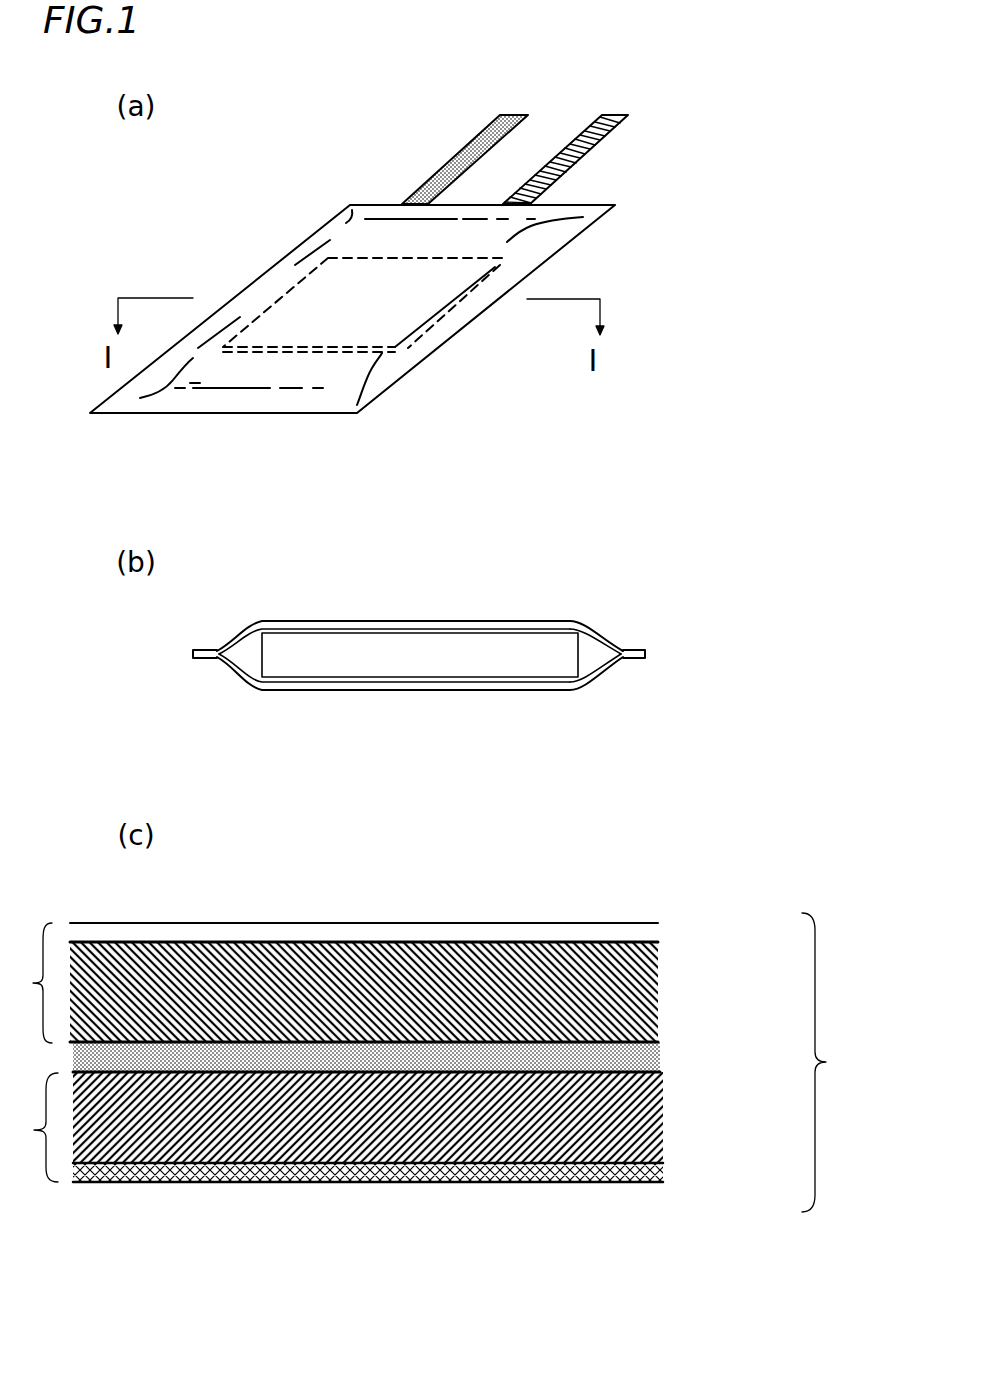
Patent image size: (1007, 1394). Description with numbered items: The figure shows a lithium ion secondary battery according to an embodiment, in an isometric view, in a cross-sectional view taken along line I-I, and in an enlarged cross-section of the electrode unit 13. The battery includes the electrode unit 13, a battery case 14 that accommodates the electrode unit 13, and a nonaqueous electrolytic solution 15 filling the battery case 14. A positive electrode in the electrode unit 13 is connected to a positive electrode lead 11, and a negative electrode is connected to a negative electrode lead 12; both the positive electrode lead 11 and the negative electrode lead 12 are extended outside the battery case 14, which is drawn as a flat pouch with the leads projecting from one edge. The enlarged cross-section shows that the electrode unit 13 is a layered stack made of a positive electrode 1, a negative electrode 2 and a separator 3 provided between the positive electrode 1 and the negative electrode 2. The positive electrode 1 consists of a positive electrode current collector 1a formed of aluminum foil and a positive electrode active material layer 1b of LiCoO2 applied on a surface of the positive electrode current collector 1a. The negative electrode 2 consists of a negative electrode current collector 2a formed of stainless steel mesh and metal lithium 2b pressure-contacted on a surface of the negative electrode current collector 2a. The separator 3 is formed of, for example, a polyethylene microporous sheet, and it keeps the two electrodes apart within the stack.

The positive electrode 1 is at (383, 978).
The positive electrode current collector 1a is at (652, 933).
The positive electrode active material layer 1b is at (658, 988).
The negative electrode 2 is at (395, 1143).
The negative electrode current collector 2a is at (663, 1172).
The metal lithium 2b is at (665, 1112).
The separator 3 is at (662, 1057).
The positive electrode lead 11 is at (468, 133).
The negative electrode lead 12 is at (610, 113).
The electrode unit 13 is at (435, 727).
The battery case 14 is at (583, 219).
The nonaqueous electrolytic solution 15 is at (592, 657).